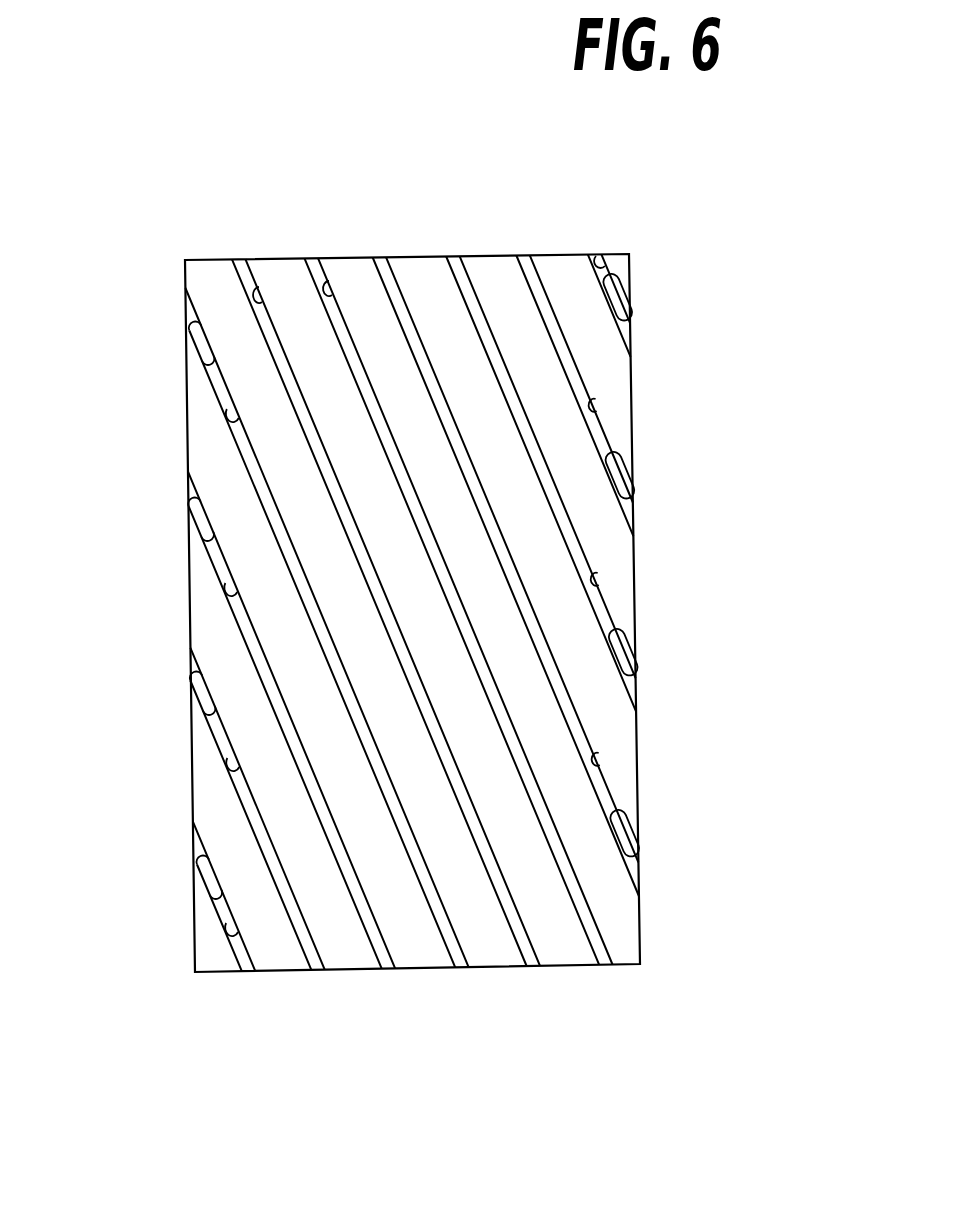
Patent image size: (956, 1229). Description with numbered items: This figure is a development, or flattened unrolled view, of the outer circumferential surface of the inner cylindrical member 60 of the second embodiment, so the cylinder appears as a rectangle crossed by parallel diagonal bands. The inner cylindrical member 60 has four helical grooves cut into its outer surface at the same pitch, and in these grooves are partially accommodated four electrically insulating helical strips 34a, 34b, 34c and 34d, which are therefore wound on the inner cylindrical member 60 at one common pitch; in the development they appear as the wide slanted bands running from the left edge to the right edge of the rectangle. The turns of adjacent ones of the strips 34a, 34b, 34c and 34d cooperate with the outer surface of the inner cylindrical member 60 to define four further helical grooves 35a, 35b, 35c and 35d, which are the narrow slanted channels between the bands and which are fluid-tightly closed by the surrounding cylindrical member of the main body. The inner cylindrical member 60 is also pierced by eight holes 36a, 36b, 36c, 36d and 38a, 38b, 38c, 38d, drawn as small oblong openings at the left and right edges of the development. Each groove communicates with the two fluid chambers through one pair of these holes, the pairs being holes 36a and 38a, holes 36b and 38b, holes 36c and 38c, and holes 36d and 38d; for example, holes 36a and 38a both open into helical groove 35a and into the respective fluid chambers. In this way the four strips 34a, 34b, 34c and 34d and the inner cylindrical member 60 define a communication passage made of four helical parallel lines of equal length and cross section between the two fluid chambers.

The inner cylindrical member 60 is at (455, 228).
The electrically insulating helical strip 34a is at (283, 955).
The electrically insulating helical strip 34b is at (347, 952).
The electrically insulating helical strip 34c is at (423, 947).
The electrically insulating helical strip 34d is at (495, 947).
The helical groove 35a is at (259, 287).
The helical groove 35b is at (329, 281).
The helical groove 35c is at (600, 765).
The helical groove 35d is at (599, 585).
The hole 36a is at (207, 877).
The hole 36b is at (206, 694).
The hole 36c is at (203, 518).
The hole 36d is at (203, 343).
The hole 38a is at (624, 478).
The hole 38b is at (619, 300).
The hole 38c is at (630, 835).
The hole 38d is at (626, 658).